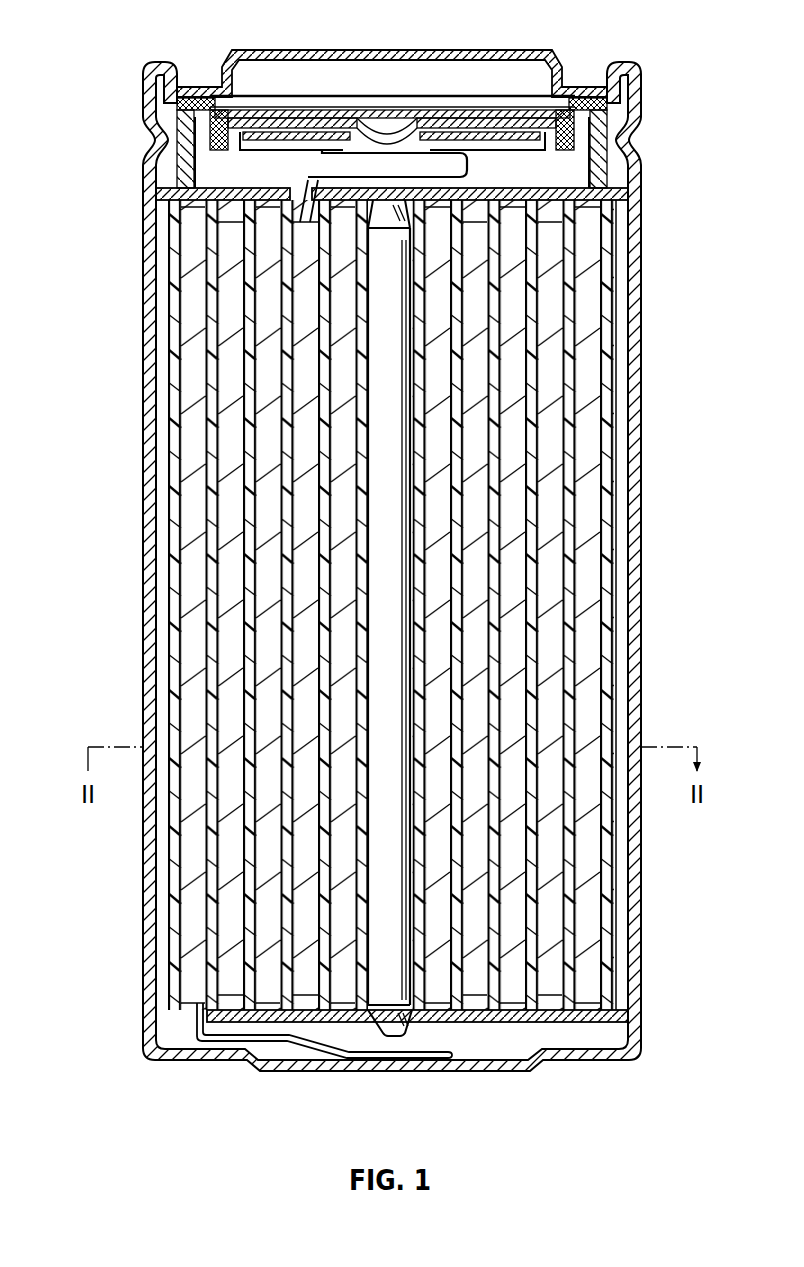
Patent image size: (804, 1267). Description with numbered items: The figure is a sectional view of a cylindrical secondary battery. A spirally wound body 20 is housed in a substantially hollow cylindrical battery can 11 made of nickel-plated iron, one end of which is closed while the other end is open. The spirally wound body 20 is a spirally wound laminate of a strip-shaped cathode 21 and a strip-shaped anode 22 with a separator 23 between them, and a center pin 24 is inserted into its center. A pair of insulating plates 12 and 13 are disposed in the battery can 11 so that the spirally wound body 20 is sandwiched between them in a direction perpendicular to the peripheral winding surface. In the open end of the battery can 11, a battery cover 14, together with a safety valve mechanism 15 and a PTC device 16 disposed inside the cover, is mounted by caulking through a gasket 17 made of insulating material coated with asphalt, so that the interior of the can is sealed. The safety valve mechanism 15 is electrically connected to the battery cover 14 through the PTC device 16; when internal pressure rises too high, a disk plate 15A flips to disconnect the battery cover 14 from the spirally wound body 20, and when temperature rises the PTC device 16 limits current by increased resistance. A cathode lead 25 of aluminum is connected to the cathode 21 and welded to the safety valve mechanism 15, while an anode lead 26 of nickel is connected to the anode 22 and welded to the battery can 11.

The battery can 11 is at (638, 252).
The insulating plate 12 is at (623, 196).
The insulating plate 13 is at (630, 1017).
The battery cover 14 is at (360, 50).
The safety valve mechanism 15 is at (512, 103).
The disk plate 15A is at (472, 122).
The PTC device 16 is at (632, 98).
The gasket 17 is at (630, 160).
The spirally wound body 20 is at (433, 605).
The cathode 21 is at (560, 451).
The anode 22 is at (593, 512).
The separator 23 is at (573, 573).
The center pin 24 is at (392, 615).
The cathode lead 25 is at (370, 153).
The anode lead 26 is at (293, 1043).